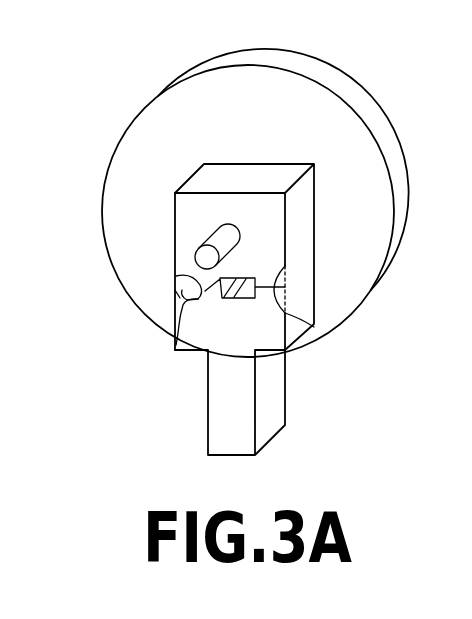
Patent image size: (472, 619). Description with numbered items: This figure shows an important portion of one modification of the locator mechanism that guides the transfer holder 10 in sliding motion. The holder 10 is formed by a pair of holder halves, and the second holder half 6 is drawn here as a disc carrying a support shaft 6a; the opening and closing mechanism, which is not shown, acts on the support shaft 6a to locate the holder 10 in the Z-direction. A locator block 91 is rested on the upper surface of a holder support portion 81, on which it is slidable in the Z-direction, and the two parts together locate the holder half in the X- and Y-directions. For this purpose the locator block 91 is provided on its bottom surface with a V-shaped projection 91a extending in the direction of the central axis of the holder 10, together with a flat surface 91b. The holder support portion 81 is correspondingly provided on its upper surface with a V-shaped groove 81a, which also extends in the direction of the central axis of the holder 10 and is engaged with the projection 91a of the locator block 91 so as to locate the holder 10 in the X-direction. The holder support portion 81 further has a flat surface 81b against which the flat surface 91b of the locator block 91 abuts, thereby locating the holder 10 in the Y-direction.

The transfer holder 10 is at (337, 60).
The second holder half 6 is at (121, 145).
The support shaft 6a is at (212, 243).
The locator block 91 is at (246, 170).
The V-shaped projection 91a is at (174, 275).
The flat surface 91b is at (285, 288).
The holder support portion 81 is at (199, 343).
The V-shaped groove 81a is at (175, 322).
The flat surface 81b is at (313, 327).